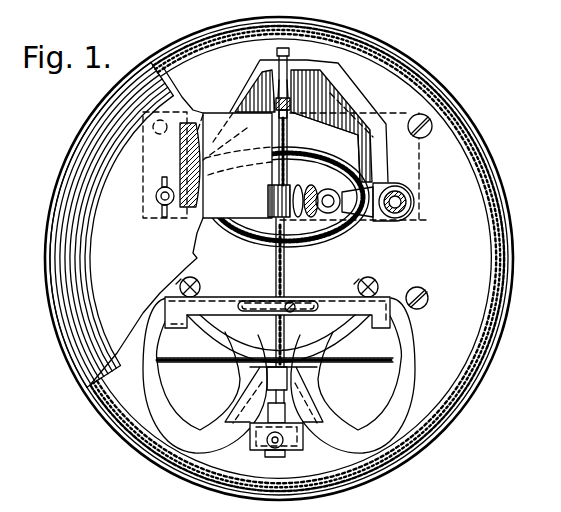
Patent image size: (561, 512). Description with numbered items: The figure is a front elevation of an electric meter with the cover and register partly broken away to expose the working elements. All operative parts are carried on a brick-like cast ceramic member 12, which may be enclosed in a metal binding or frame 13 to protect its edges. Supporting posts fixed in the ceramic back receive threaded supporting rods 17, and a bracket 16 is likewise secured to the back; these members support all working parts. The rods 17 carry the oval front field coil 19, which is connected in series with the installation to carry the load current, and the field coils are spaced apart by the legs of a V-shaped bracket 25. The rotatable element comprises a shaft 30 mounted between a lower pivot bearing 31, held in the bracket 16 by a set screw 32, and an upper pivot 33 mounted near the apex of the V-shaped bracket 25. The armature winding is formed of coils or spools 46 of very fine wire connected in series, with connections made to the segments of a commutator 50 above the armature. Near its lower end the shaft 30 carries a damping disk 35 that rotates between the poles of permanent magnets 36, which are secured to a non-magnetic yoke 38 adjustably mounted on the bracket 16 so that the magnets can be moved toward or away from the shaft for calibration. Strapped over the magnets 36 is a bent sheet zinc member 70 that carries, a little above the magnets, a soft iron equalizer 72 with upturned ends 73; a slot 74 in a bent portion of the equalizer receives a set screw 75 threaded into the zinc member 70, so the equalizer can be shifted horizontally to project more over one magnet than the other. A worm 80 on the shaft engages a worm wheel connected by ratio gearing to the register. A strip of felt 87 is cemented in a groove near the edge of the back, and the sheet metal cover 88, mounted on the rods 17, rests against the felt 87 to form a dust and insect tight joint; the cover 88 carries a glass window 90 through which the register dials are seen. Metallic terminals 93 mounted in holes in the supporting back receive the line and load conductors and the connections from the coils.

The ceramic member 12 is at (419, 211).
The metal binding or frame 13 is at (514, 281).
The bracket 16 is at (274, 451).
The supporting rods 17 is at (162, 204).
The front field coil 19 is at (358, 228).
The V-shaped bracket 25 is at (240, 104).
The shaft 30 is at (276, 273).
The lower pivot bearing 31 is at (282, 457).
The set screw 32 is at (298, 445).
The upper pivot 33 is at (290, 73).
The damping disk 35 is at (356, 360).
The permanent magnets 36 is at (170, 409).
The non-magnetic yoke 38 is at (310, 401).
The armature coils or spools 46 is at (270, 190).
The commutator 50 is at (289, 131).
The non-magnetic member 70 is at (224, 318).
The magnetic equalizer 72 is at (277, 301).
The upturned ends 73 is at (192, 252).
The slot 74 is at (304, 301).
The set screw 75 is at (291, 313).
The worm 80 is at (288, 104).
The felt strip 87 is at (470, 376).
The sheet metal cover 88 is at (126, 224).
The glass window 90 is at (180, 166).
The metallic terminals 93 is at (193, 281).